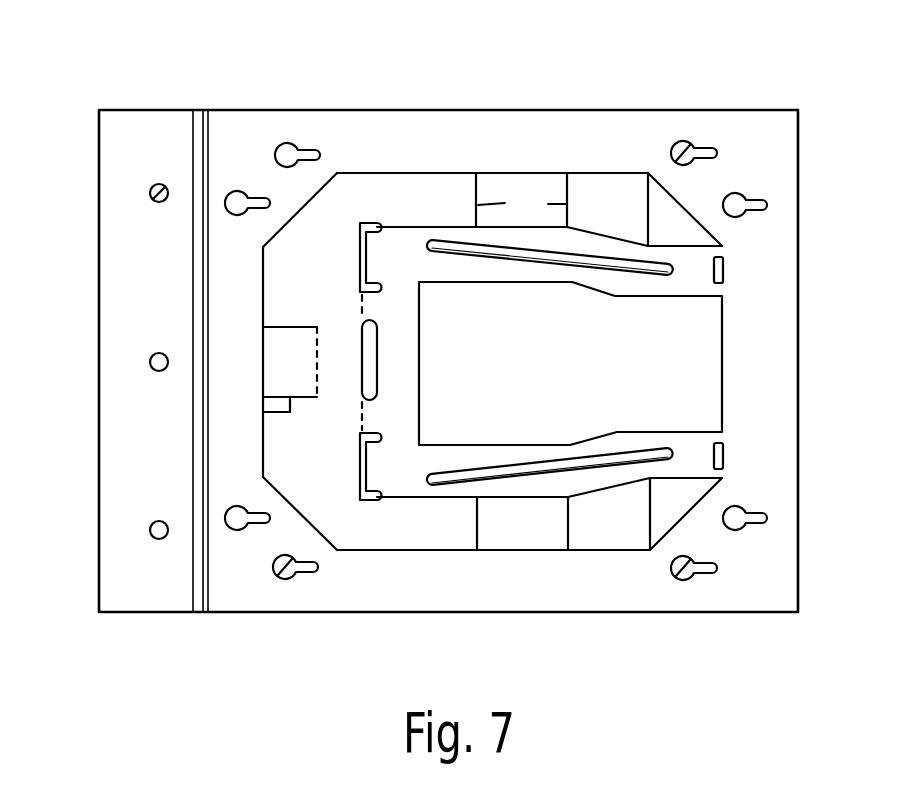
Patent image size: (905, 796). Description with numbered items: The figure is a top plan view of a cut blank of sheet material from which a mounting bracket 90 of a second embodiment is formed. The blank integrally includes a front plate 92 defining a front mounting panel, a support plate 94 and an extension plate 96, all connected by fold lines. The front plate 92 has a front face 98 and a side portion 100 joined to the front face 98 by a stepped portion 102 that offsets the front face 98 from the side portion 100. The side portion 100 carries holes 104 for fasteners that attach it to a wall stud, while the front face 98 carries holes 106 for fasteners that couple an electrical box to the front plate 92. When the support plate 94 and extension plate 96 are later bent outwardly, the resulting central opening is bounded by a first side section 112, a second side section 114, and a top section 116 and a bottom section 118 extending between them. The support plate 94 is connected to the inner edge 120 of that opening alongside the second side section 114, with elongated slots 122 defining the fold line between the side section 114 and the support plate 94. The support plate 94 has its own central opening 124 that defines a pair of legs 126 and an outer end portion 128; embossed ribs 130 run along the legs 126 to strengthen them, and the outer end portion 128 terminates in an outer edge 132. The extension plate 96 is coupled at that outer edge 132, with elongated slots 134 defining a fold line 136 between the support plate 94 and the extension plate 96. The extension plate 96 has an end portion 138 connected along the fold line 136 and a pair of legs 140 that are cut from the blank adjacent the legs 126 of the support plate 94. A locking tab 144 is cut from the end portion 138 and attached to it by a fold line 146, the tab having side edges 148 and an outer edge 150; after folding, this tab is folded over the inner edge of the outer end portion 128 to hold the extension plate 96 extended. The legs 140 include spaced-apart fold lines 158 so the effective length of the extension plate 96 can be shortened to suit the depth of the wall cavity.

The mounting bracket 90 is at (538, 95).
The front plate 92 is at (353, 108).
The support plate 94 is at (412, 262).
The extension plate 96 is at (347, 197).
The front face 98 is at (585, 145).
The side portion 100 is at (116, 265).
The stepped portion 102 is at (200, 110).
The holes 104 is at (150, 193).
The holes 106 is at (685, 146).
The first side section 112 is at (236, 442).
The second side section 114 is at (768, 346).
The top section 116 is at (427, 137).
The bottom section 118 is at (432, 600).
The inner edge 120 is at (718, 365).
The elongated slots 122 is at (723, 272).
The central opening 124 is at (683, 397).
The legs 126 is at (532, 272).
The outer end portion 128 is at (397, 375).
The embossed ribs 130 is at (610, 270).
The outer edge 132 is at (360, 257).
The elongated slots 134 is at (377, 227).
The fold line 136 is at (362, 314).
The end portion 138 is at (280, 283).
The legs 140 is at (495, 185).
The locking tab 144 is at (290, 352).
The fold line 146 is at (330, 345).
The side edges 148 is at (290, 328).
The outer edge 150 is at (263, 365).
The fold lines 158 is at (548, 204).